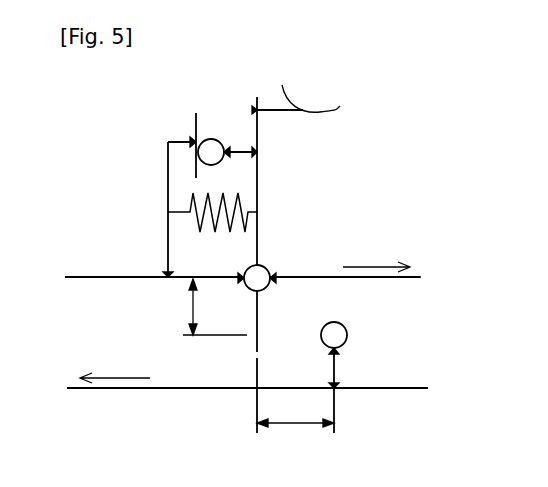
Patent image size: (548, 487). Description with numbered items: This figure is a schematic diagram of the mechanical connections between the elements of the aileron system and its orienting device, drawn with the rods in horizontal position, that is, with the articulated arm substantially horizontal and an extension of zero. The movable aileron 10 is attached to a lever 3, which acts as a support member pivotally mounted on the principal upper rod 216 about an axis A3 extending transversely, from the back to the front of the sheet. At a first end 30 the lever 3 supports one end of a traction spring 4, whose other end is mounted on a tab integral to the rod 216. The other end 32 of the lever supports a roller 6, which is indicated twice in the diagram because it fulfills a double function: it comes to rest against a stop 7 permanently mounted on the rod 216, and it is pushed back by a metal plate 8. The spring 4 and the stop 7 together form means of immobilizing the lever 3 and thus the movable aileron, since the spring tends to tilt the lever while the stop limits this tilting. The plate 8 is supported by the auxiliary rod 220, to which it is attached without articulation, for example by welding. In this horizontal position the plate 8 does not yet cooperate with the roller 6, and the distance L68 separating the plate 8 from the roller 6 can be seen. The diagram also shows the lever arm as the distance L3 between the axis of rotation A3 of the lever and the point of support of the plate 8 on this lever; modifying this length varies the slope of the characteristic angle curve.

The movable aileron 10 is at (320, 100).
The stop 7 is at (196, 135).
The roller 6 is at (211, 145).
The traction spring 4 is at (190, 197).
The other end of the lever 32 is at (257, 148).
The first end of the lever 30 is at (257, 212).
The lever 3 is at (273, 235).
The principal upper rod 216 is at (345, 278).
The metal plate 8 is at (345, 360).
The auxiliary rod 220 is at (368, 388).
The axis of rotation of the lever A3 is at (265, 286).
The lever arm distance L3 is at (202, 307).
The distance between plate and roller L68 is at (295, 411).